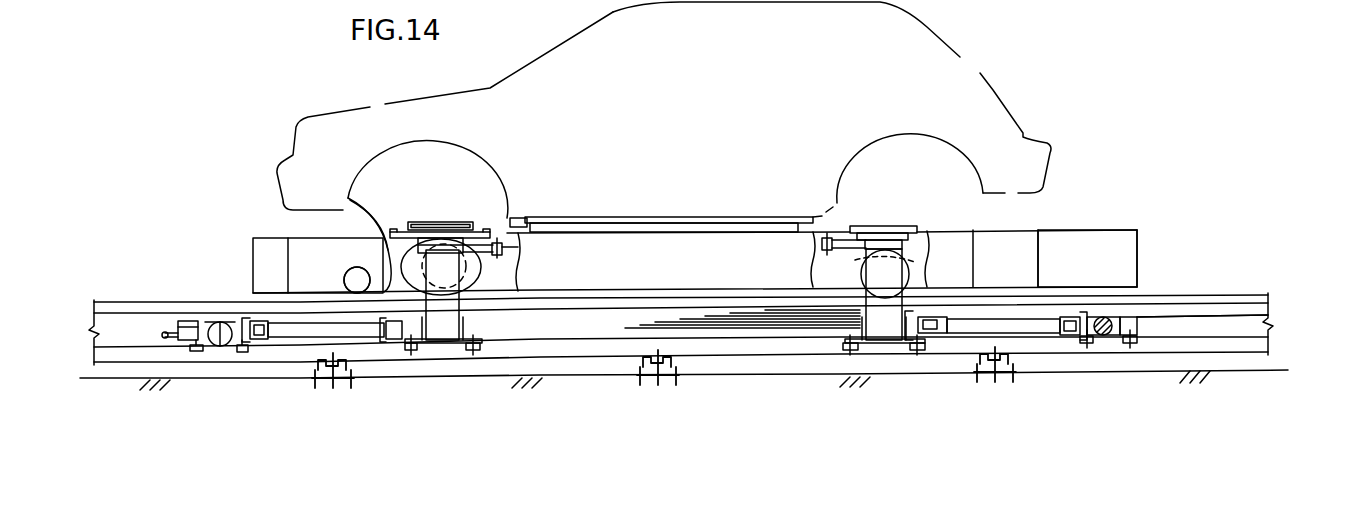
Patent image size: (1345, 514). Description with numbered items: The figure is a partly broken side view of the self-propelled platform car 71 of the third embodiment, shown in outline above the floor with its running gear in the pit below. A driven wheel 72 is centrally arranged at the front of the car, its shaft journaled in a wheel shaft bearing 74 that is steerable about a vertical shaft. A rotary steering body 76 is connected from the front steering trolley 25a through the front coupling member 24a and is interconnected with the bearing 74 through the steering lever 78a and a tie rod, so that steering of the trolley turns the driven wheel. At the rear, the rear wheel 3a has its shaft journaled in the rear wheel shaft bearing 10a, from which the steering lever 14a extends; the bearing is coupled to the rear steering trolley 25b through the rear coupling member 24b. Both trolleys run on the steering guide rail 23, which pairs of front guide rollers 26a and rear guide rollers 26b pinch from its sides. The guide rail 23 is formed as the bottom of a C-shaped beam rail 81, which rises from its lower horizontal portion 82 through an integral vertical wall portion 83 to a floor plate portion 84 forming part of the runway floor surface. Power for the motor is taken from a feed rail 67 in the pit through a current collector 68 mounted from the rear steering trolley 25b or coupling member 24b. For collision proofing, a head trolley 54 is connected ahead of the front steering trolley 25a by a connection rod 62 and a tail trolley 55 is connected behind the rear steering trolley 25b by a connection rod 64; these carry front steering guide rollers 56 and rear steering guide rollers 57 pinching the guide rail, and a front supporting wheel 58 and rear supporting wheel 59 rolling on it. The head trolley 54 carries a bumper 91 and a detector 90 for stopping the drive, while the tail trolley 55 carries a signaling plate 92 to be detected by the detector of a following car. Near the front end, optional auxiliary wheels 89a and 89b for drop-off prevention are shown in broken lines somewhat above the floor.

The rear wheel 3a is at (908, 270).
The rear wheel shaft bearing 10a is at (890, 229).
The steering lever 14a is at (838, 229).
The steering guide rail 23 is at (1172, 348).
The front coupling member 24a is at (447, 283).
The rear coupling member 24b is at (857, 274).
The front steering trolley 25a is at (462, 328).
The rear steering trolley 25b is at (866, 340).
The front guide rollers 26a is at (456, 345).
The rear guide rollers 26b is at (850, 343).
The head trolley 54 is at (224, 347).
The tail trolley 55 is at (1113, 337).
The front steering guide rollers 56 is at (195, 353).
The rear steering guide rollers 57 is at (1087, 342).
The front supporting wheel 58 is at (223, 320).
The rear supporting wheel 59 is at (1100, 317).
The connection rod 62 is at (373, 330).
The connection rod 64 is at (1047, 320).
The feed rail 67 is at (768, 327).
The current collector 68 is at (840, 317).
The self-propelled platform car 71 is at (667, 247).
The driven wheel 72 is at (478, 270).
The wheel shaft bearing 74 is at (348, 197).
The rotary steering body 76 is at (393, 222).
The steering lever 78a is at (477, 220).
The C-shaped beam rail 81 is at (1233, 323).
The lower horizontal portion 82 is at (1220, 353).
The vertical wall portion 83 is at (1202, 316).
The floor plate portion 84 is at (1220, 298).
The auxiliary wheel 89a is at (347, 272).
The auxiliary wheel 89b is at (357, 280).
The detector 90 is at (183, 320).
The bumper 91 is at (177, 320).
The signaling plate 92 is at (1150, 317).